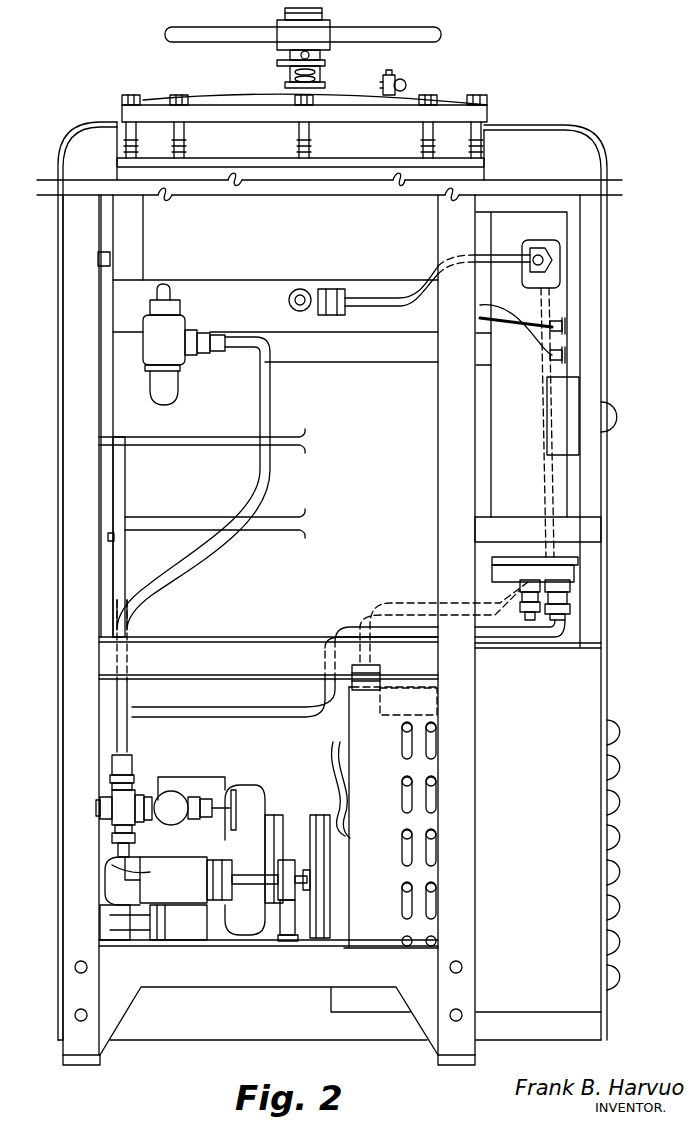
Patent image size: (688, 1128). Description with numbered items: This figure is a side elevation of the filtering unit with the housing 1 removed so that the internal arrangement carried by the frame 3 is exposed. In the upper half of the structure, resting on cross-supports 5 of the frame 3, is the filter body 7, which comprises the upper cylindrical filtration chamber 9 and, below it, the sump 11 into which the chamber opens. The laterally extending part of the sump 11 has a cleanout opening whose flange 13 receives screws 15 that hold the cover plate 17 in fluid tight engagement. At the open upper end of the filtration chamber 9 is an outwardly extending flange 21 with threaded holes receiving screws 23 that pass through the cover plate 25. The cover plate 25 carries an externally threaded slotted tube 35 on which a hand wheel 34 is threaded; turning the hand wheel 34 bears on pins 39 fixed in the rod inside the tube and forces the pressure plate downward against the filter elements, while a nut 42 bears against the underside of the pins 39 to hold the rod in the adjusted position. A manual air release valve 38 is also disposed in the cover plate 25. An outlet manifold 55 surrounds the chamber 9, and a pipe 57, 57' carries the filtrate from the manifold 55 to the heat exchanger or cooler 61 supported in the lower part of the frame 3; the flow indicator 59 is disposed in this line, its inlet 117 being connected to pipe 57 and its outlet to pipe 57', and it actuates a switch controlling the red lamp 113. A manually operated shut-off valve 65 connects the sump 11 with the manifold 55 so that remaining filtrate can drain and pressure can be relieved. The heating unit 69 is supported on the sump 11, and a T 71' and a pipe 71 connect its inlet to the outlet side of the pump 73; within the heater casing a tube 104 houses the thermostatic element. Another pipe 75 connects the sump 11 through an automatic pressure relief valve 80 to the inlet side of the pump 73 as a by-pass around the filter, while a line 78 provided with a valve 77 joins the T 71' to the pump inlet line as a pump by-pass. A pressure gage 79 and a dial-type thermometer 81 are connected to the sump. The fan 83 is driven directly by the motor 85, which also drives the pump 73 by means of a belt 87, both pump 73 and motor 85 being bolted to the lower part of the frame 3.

The housing 1 is at (62, 150).
The frame 3 is at (440, 556).
The cross-supports 5 is at (237, 669).
The filter body 7 is at (364, 452).
The filtration chamber 9 is at (314, 247).
The sump 11 is at (218, 497).
The flange 13 is at (121, 468).
The screws 15 is at (108, 537).
The cover plate 17 is at (100, 583).
The outwardly extending flange 21 is at (478, 165).
The screws 23 is at (131, 95).
The cover plate 25 is at (233, 100).
The hand wheel 34 is at (441, 34).
The slotted tube 35 is at (325, 85).
The manual air release valve 38 is at (406, 82).
The pins 39 is at (322, 53).
The nut 42 is at (283, 64).
The outlet manifold 55 is at (275, 306).
The pipe 57 is at (409, 293).
The pipe 57' is at (453, 489).
The flow indicator 59 is at (562, 252).
The heat exchanger or cooler 61 is at (391, 817).
The manually operated shut-off valve 65 is at (95, 270).
The heating unit 69 is at (538, 421).
The pipe 71 is at (348, 684).
The T 71' is at (132, 806).
The pump 73 is at (125, 858).
The pipe 75 is at (218, 568).
The valve 77 is at (232, 790).
The line 78 is at (182, 847).
The pressure gage 79 is at (565, 326).
The automatic pressure relief valve 80 is at (155, 347).
The dial-type thermometer 81 is at (567, 355).
The fan 83 is at (335, 768).
The motor 85 is at (215, 790).
The belt 87 is at (318, 815).
The tube 104 is at (535, 622).
The red lamp 113 is at (615, 412).
The inlet 117 is at (525, 255).